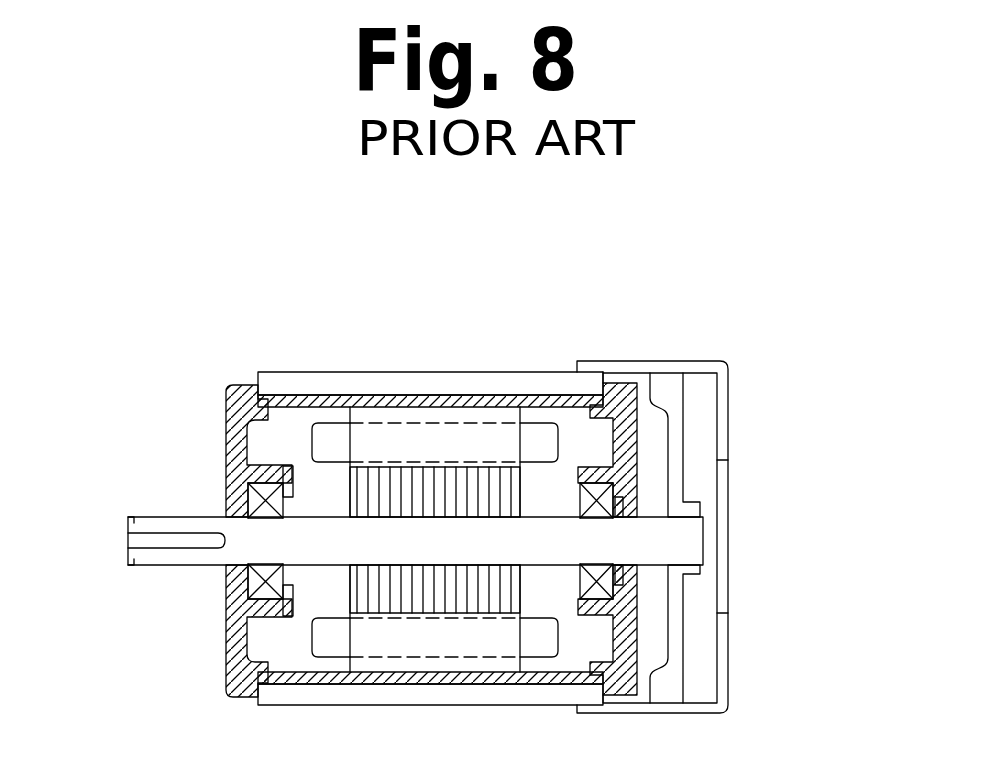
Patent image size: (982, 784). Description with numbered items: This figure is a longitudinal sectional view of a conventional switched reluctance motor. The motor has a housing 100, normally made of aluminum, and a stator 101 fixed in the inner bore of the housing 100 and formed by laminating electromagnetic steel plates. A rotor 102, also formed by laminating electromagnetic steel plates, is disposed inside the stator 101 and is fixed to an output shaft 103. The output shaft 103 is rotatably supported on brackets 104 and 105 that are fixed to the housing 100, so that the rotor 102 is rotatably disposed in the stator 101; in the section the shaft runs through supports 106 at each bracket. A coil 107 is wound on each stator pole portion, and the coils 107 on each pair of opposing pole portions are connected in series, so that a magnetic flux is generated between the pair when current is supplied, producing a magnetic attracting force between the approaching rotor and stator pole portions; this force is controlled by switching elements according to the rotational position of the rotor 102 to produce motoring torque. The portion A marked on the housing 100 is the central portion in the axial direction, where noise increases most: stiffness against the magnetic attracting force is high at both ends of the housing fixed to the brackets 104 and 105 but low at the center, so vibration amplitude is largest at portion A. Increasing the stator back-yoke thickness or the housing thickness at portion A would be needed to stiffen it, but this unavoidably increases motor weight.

The housing 100 is at (545, 393).
The stator 101 is at (485, 410).
The rotor 102 is at (497, 483).
The output shaft 103 is at (557, 541).
The bracket 104 is at (622, 477).
The bracket 105 is at (235, 478).
The bearing 106 is at (248, 590).
The coil 107 is at (327, 440).
The portion A is at (427, 362).